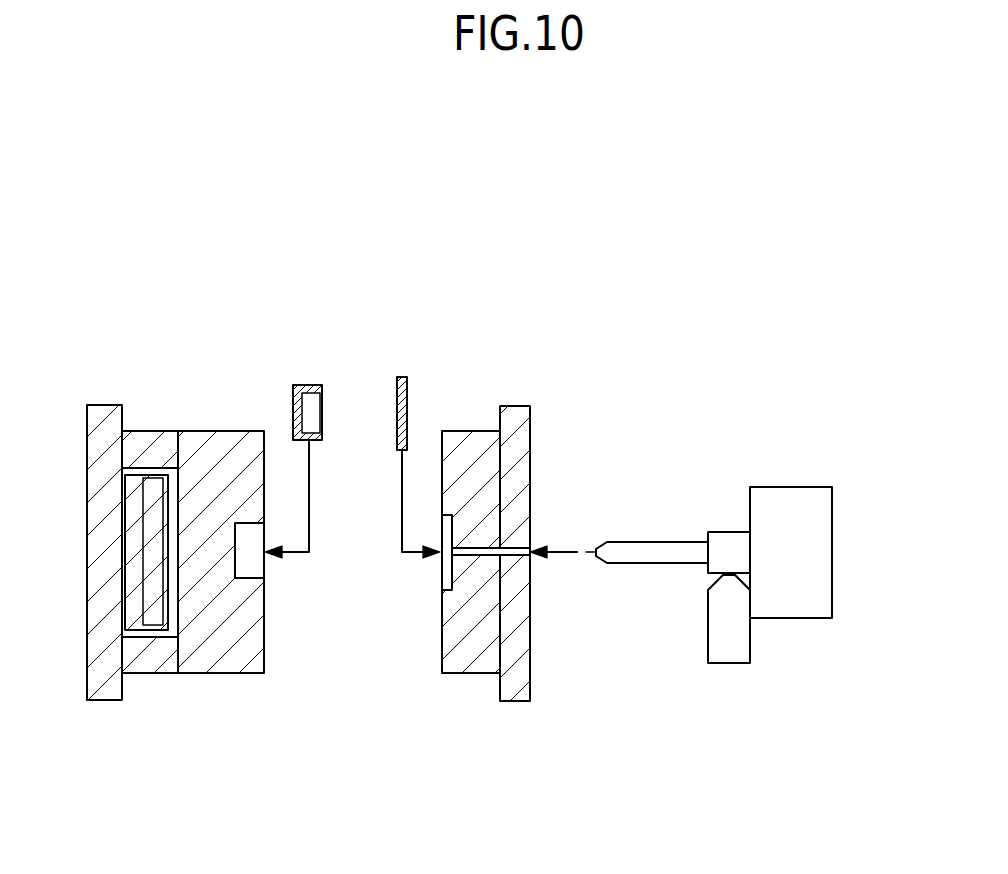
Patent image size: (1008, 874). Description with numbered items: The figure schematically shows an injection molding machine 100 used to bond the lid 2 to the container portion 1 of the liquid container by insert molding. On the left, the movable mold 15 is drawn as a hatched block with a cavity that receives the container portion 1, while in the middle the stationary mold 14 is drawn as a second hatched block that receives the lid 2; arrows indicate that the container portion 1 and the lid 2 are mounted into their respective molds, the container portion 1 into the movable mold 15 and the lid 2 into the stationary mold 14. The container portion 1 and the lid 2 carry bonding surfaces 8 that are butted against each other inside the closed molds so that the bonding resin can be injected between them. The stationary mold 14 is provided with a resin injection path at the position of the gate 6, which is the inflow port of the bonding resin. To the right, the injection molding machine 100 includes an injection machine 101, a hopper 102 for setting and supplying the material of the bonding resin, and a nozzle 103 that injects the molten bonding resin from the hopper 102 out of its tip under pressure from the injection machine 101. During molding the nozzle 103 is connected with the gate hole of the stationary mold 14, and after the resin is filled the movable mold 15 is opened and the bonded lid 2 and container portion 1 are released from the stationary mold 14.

The container portion 1 is at (305, 386).
The lid 2 is at (405, 377).
The gate 6 is at (452, 558).
The bonding surfaces 8 is at (396, 396).
The stationary mold 14 is at (509, 542).
The movable mold 15 is at (207, 431).
The injection molding machine 100 is at (714, 530).
The injection machine 101 is at (808, 617).
The hopper 102 is at (728, 665).
The nozzle 103 is at (663, 555).